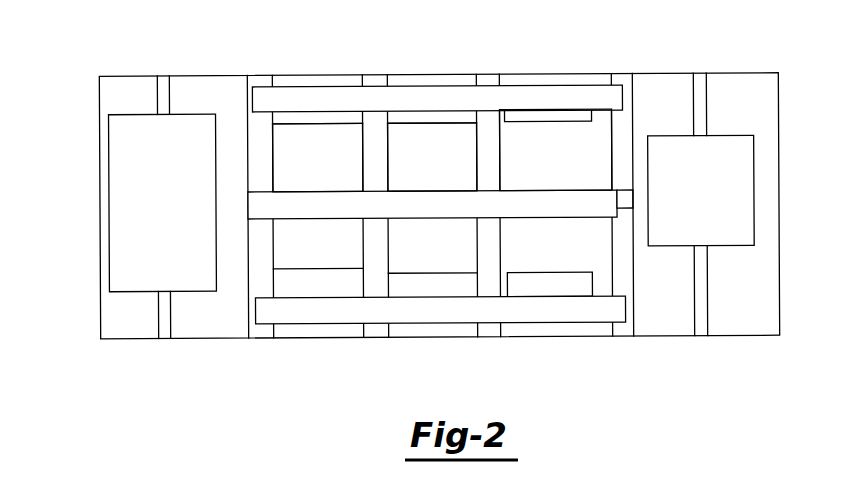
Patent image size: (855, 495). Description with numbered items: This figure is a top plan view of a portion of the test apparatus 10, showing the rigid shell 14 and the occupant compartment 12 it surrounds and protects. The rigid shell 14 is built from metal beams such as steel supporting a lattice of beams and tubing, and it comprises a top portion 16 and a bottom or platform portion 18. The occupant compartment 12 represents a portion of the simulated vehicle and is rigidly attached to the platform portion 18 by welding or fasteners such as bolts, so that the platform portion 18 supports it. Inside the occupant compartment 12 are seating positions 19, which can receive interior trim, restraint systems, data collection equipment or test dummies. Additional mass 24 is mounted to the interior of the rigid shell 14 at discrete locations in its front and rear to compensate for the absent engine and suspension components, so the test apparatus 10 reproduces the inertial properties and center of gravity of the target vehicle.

The test apparatus 10 is at (86, 144).
The occupant compartment 12 is at (303, 169).
The rigid shell 14 is at (440, 85).
The top portion 16 is at (310, 307).
The platform portion 18 is at (738, 337).
The seating positions 19 is at (418, 168).
The additional mass 24 is at (145, 206).